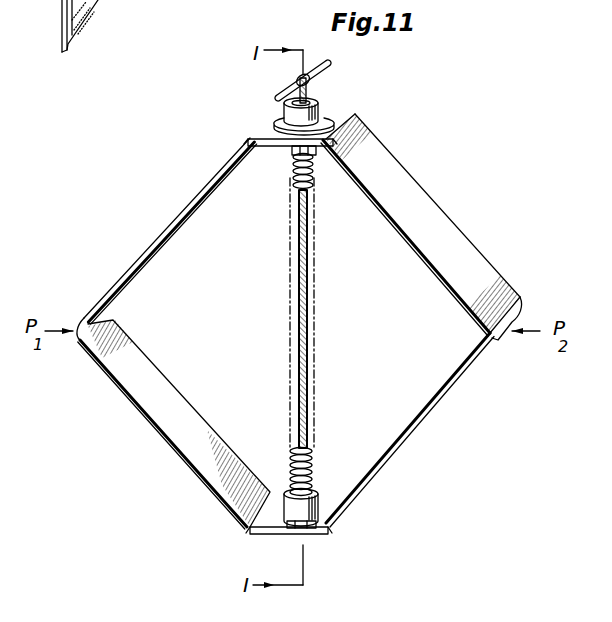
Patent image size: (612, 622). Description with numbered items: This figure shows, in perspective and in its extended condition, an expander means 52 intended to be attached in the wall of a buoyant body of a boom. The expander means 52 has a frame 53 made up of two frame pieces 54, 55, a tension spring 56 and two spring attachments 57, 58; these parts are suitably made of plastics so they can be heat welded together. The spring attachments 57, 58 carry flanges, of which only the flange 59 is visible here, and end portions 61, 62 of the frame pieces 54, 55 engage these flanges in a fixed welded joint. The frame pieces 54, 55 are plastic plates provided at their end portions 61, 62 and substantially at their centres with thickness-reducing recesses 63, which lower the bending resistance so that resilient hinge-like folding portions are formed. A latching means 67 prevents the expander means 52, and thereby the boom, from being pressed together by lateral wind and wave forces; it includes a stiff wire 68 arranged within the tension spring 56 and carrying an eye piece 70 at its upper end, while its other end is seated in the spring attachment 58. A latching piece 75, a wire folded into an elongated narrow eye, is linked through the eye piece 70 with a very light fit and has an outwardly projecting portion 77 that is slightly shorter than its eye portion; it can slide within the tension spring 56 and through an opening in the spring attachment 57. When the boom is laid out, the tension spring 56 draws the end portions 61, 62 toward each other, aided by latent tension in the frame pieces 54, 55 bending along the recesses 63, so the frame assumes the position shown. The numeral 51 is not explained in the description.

The support member 51 is at (74, 33).
The expander means 52 is at (173, 333).
The frame 53 is at (421, 320).
The frame piece 54 is at (163, 235).
The frame piece 55 is at (455, 218).
The tension spring 56 is at (313, 448).
The spring attachment 57 is at (317, 107).
The spring attachment 58 is at (314, 492).
The flange 59 is at (330, 119).
The end portion 61 is at (268, 136).
The end portion 62 is at (292, 150).
The thickness-reducing recess 63 is at (250, 147).
The latching means 67 is at (285, 74).
The stiff wire 68 is at (308, 345).
The eye piece 70 is at (326, 64).
The latching piece 75 is at (297, 76).
The outwardly projecting portion 77 is at (313, 81).